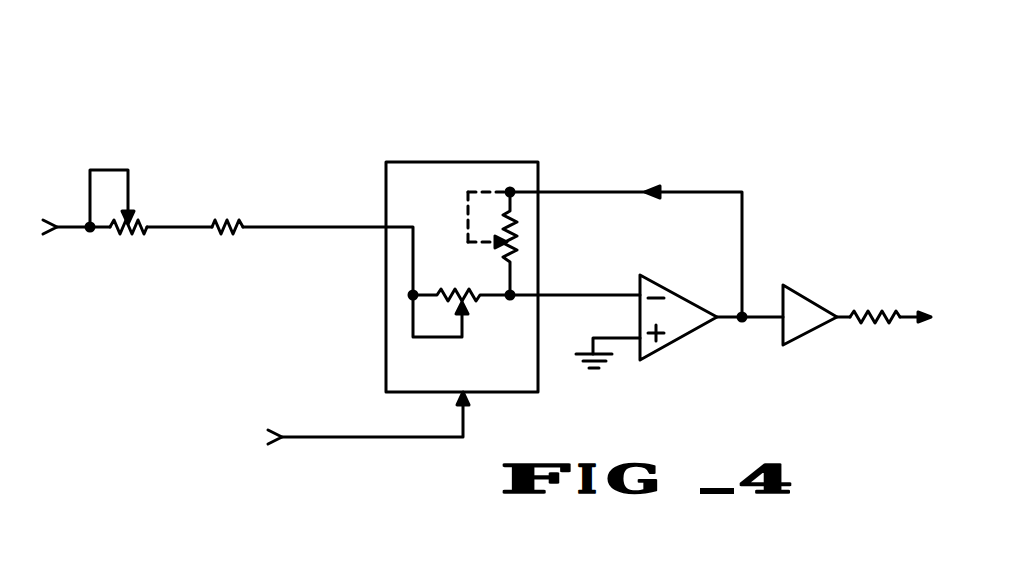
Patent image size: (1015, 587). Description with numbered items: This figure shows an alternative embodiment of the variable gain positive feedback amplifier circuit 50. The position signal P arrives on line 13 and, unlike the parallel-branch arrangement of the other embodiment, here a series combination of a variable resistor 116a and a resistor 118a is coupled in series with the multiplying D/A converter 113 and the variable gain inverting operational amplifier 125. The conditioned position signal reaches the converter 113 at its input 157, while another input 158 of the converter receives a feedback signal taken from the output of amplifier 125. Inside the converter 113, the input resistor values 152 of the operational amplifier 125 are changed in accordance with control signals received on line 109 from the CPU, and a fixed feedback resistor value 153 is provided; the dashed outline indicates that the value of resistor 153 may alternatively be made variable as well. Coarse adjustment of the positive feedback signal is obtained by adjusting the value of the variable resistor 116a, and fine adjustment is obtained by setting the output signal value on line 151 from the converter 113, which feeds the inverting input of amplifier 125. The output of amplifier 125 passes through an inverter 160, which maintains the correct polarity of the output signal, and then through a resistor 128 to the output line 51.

The variable gain positive feedback amplifier circuit 50 is at (308, 65).
The position signal P is at (76, 217).
The line 13 is at (72, 228).
The variable resistor 116a is at (148, 226).
The resistor 118a is at (243, 226).
The input 157 is at (380, 228).
The multiplying D/A converter 113 is at (480, 162).
The input resistor values 152 is at (452, 288).
The fixed feedback resistor value 153 is at (518, 231).
The input 158 is at (545, 191).
The line 151 is at (563, 293).
The variable gain inverting operational amplifier 125 is at (687, 327).
The inverter 160 is at (800, 300).
The resistor 128 is at (867, 320).
The line 51 is at (906, 313).
The line 109 is at (302, 438).